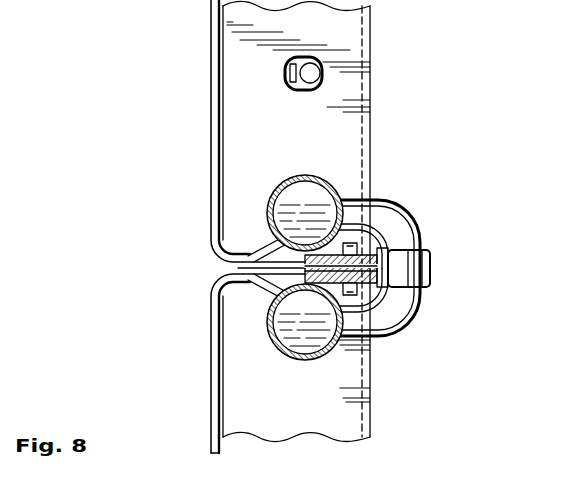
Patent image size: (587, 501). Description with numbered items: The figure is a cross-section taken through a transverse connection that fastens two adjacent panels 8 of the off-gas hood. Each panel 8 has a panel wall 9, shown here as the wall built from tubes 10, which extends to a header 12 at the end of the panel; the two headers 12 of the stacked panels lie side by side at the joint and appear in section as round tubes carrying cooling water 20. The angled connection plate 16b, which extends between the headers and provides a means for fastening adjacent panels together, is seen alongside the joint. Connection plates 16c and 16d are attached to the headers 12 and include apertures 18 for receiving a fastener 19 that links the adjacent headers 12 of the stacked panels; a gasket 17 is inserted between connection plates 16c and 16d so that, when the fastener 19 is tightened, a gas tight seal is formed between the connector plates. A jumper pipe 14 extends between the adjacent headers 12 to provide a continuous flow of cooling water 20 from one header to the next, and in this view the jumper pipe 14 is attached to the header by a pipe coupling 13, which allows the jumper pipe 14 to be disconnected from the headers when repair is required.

The panel 8 is at (413, 129).
The panel wall 9 is at (213, 165).
The tube 10 is at (215, 105).
The header 12 is at (312, 180).
The pipe coupling 13 is at (413, 270).
The jumper pipe 14 is at (395, 213).
The angled connection plate 16b is at (247, 77).
The connection plate 16c is at (390, 295).
The connection plate 16d is at (395, 220).
The gasket 17 is at (285, 285).
The aperture 18 is at (348, 283).
The fastener 19 is at (310, 73).
The cooling water 20 is at (290, 190).